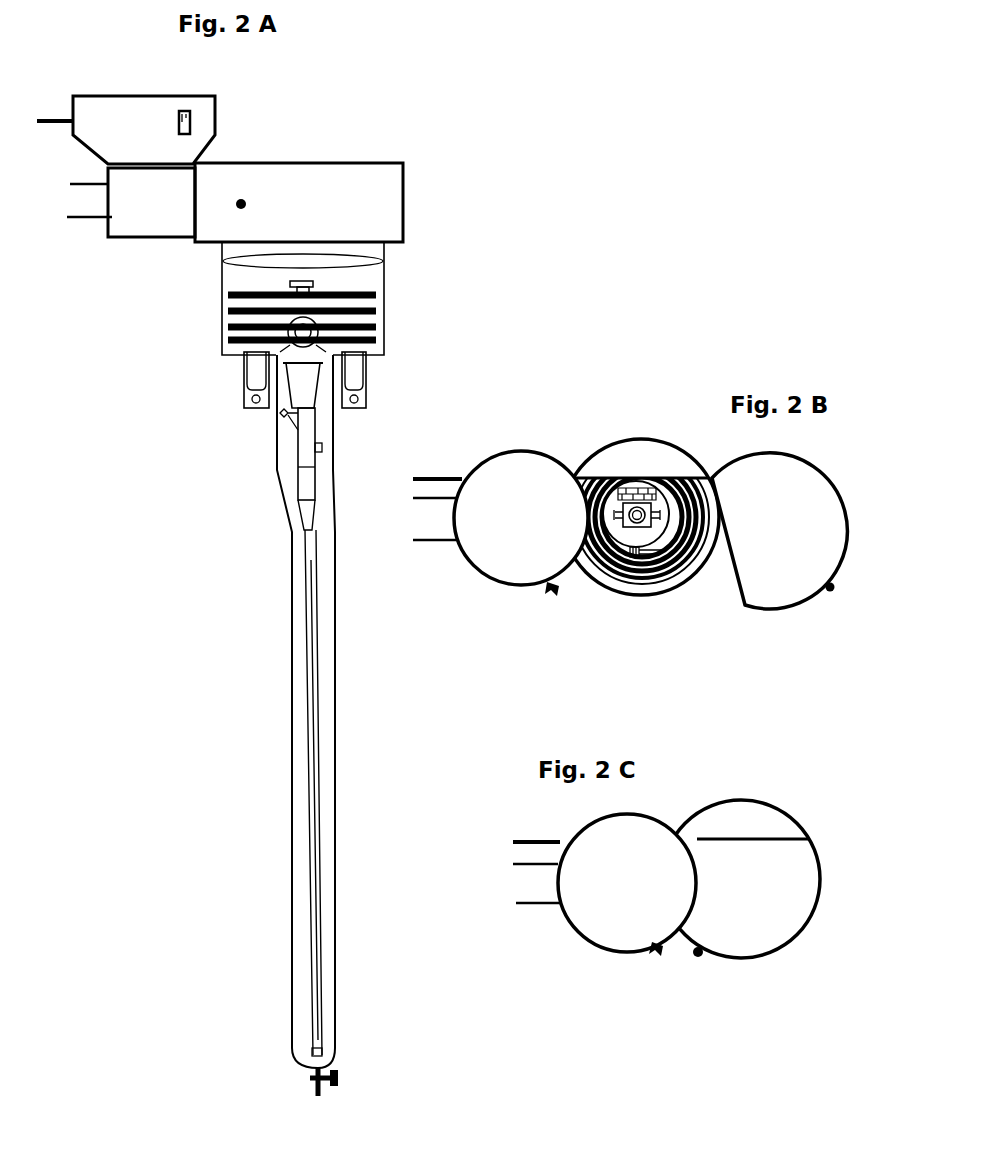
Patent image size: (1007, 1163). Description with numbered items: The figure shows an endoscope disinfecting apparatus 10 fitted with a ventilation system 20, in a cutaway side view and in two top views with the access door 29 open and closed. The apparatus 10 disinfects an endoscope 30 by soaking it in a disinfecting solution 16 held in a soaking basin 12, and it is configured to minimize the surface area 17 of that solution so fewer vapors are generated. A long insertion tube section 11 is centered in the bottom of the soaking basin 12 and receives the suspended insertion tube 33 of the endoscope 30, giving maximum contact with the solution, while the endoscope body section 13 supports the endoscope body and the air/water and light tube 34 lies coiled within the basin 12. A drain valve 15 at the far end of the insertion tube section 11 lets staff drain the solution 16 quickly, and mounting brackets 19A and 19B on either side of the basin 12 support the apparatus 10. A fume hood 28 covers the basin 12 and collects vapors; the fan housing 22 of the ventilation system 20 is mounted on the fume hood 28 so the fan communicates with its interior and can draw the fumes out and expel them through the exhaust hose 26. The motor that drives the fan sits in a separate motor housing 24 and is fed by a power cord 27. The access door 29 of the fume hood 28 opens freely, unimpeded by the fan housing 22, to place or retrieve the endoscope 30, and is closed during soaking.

In FIG. 2A, the endoscope disinfecting apparatus 10 is at (173, 325).
In FIG. 2A, the insertion tube section 11 is at (295, 642).
In FIG. 2A, the soaking basin 12 is at (385, 305).
In FIG. 2B, the soaking basin 12 is at (600, 585).
In FIG. 2A, the endoscope body section 13 is at (277, 438).
In FIG. 2B, the endoscope body section 13 is at (607, 532).
In FIG. 2A, the drain valve 15 is at (338, 1079).
In FIG. 2A, the disinfecting solution 16 is at (368, 275).
In FIG. 2A, the surface area 17 is at (240, 223).
In FIG. 2A, the mounting bracket 19A is at (243, 380).
In FIG. 2A, the mounting bracket 19B is at (368, 376).
In FIG. 2A, the ventilation system 20 is at (362, 98).
In FIG. 2A, the fan housing 22 is at (151, 202).
In FIG. 2A, the motor housing 24 is at (144, 130).
In FIG. 2B, the motor housing 24 is at (521, 523).
In FIG. 2C, the motor housing 24 is at (627, 885).
In FIG. 2A, the exhaust hose 26 is at (76, 225).
In FIG. 2B, the exhaust hose 26 is at (433, 543).
In FIG. 2C, the exhaust hose 26 is at (525, 905).
In FIG. 2A, the power cord 27 is at (72, 132).
In FIG. 2B, the power cord 27 is at (437, 477).
In FIG. 2C, the power cord 27 is at (540, 840).
In FIG. 2A, the fume hood 28 is at (418, 203).
In FIG. 2B, the fume hood 28 is at (641, 487).
In FIG. 2C, the fume hood 28 is at (725, 800).
In FIG. 2A, the access door 29 is at (299, 202).
In FIG. 2B, the access door 29 is at (779, 531).
In FIG. 2C, the access door 29 is at (741, 879).
In FIG. 2A, the endoscope 30 is at (280, 495).
In FIG. 2B, the endoscope 30 is at (687, 578).
In FIG. 2A, the insertion tube 33 is at (313, 677).
In FIG. 2B, the air/water and light tube 34 is at (648, 580).